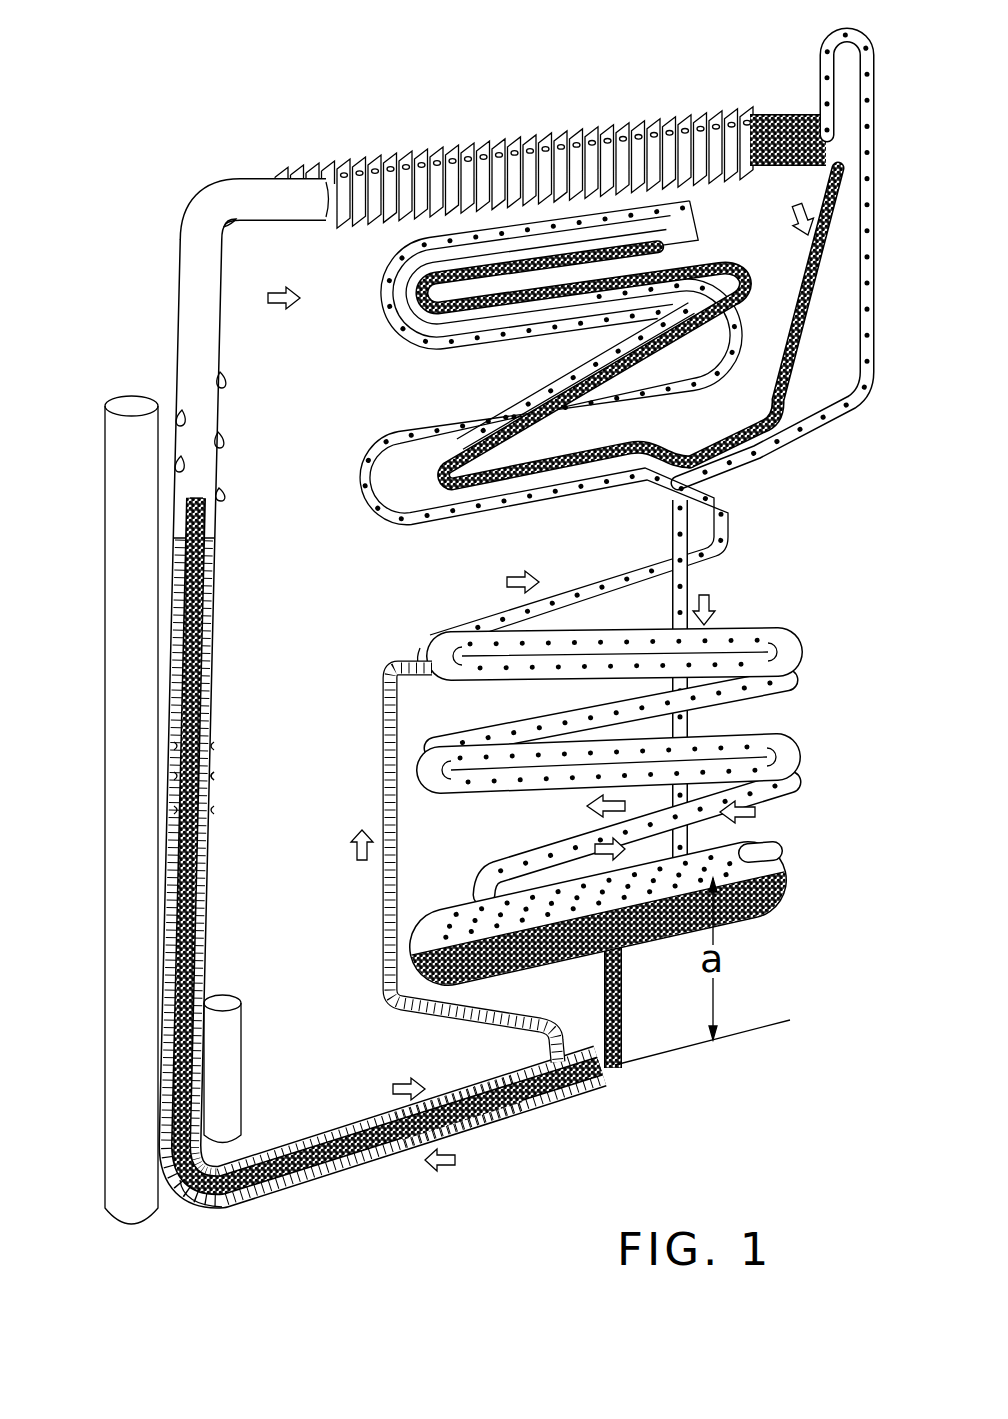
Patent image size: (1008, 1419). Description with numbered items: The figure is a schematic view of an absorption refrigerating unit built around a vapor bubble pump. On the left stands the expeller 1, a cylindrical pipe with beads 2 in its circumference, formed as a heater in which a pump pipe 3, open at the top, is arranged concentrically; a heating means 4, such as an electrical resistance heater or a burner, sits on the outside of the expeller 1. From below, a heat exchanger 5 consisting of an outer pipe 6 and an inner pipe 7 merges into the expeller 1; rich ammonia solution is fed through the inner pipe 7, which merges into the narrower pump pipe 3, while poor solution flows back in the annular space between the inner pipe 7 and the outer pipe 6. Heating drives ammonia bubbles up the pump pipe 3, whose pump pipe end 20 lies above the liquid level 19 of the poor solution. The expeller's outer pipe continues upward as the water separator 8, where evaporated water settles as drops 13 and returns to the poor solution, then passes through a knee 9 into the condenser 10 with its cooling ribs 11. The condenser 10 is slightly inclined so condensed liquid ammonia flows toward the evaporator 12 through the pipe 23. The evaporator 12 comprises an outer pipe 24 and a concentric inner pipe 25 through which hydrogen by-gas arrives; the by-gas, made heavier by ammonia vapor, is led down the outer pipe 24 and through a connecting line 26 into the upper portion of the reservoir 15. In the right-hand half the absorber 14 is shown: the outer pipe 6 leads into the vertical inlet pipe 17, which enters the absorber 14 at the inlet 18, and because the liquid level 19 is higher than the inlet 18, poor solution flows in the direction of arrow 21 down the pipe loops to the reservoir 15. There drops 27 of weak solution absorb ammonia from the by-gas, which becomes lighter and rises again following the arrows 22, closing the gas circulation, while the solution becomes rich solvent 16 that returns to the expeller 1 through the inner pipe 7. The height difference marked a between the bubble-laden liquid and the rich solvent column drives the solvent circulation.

The expeller 1 is at (210, 757).
The beads 2 is at (206, 777).
The pump pipe 3 is at (390, 828).
The heating means 4 is at (118, 1165).
The heat exchanger 5 is at (370, 1173).
The outer pipe 6 is at (280, 1147).
The inner pipe 7 is at (357, 1140).
The water separator 8 is at (356, 694).
The knee 9 is at (233, 182).
The condenser 10 is at (416, 138).
The cooling ribs 11 is at (503, 133).
The evaporator 12 is at (692, 217).
The drops 13 is at (222, 384).
The absorber 14 is at (613, 736).
The reservoir 15 is at (765, 917).
The rich solvent 16 is at (638, 923).
The inlet pipe 17 is at (421, 865).
The inlet 18 is at (420, 660).
The liquid level 19 is at (387, 850).
The pump pipe end 20 is at (200, 496).
The arrow 21 is at (352, 850).
The arrows 22 is at (512, 580).
The pipe 23 is at (743, 292).
The outer pipe 24 is at (568, 408).
The inner pipe 25 is at (587, 326).
The connecting line 26 is at (694, 590).
The drops 27 is at (497, 868).